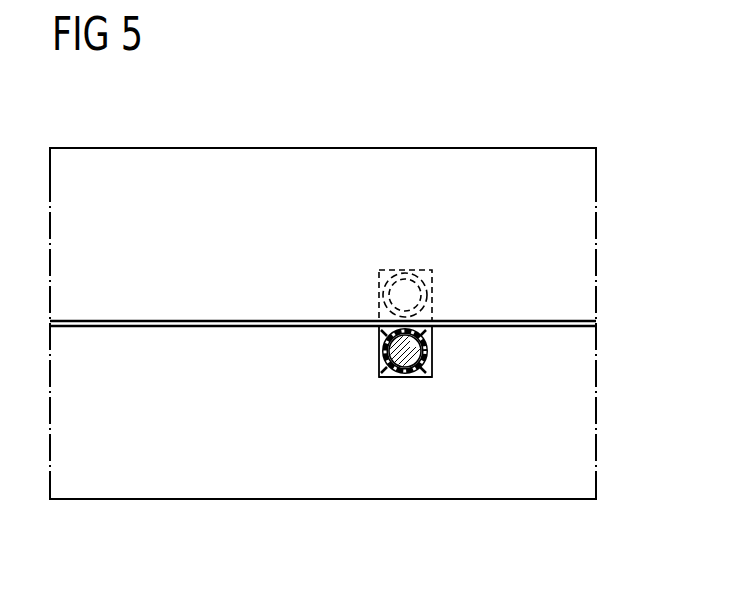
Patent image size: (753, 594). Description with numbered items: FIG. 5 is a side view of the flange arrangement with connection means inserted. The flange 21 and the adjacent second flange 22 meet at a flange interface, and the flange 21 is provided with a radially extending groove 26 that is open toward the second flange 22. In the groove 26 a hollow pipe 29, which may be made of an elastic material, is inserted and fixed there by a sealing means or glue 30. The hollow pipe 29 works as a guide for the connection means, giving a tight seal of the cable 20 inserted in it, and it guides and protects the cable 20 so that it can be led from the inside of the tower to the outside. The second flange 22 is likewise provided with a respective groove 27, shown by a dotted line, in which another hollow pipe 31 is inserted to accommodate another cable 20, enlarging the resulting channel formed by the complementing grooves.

The cable 20 is at (404, 293).
The flange 21 is at (576, 442).
The second flange 22 is at (576, 199).
The groove 26 is at (432, 368).
The channel 27 is at (418, 272).
The hollow pipe 29 is at (407, 378).
The glue 30 is at (383, 378).
The hollow pipe 31 is at (408, 272).